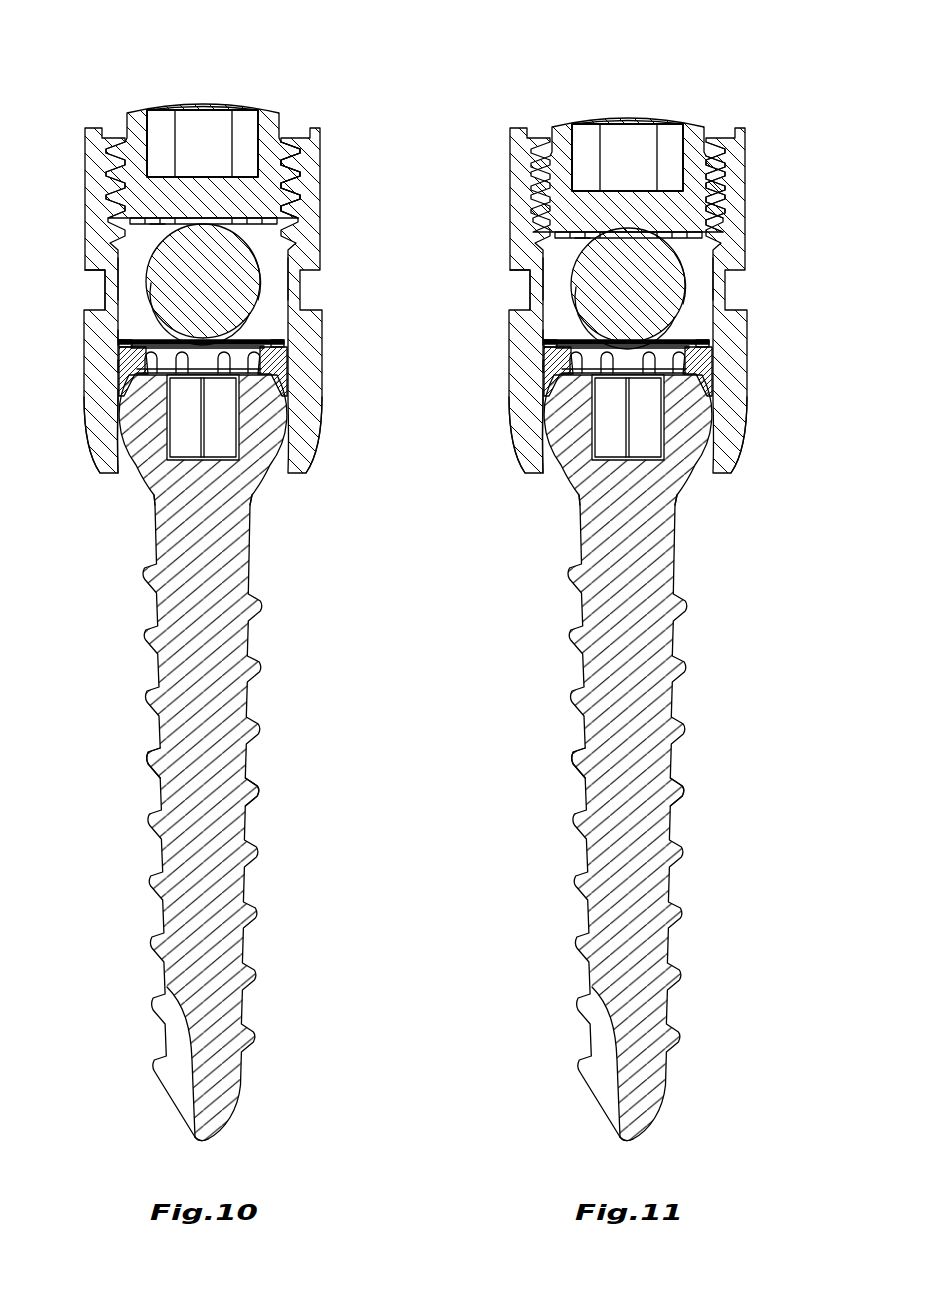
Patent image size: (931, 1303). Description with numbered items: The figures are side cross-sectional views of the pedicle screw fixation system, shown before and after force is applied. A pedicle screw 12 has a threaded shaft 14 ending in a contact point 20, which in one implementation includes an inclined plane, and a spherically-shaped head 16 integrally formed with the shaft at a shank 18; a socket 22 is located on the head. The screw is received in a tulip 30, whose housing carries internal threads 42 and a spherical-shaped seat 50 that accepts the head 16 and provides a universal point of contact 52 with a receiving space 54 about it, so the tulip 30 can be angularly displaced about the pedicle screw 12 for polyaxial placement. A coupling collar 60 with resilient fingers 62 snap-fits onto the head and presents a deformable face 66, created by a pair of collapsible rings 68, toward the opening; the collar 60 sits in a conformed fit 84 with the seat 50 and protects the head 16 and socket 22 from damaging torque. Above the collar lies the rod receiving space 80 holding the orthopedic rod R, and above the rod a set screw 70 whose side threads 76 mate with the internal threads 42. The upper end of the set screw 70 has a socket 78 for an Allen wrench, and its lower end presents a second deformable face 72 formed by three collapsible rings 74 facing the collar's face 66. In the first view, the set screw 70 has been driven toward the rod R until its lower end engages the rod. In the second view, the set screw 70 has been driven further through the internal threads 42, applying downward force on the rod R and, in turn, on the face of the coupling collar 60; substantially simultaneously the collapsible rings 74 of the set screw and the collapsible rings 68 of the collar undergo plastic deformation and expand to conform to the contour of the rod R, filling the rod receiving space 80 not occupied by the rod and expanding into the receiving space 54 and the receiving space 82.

In FIG. 10, the pedicle screw 12 is at (203, 775).
In FIG. 11, the pedicle screw 12 is at (628, 775).
In FIG. 10, the threaded shaft 14 is at (150, 762).
In FIG. 11, the threaded shaft 14 is at (587, 777).
In FIG. 10, the spherically-shaped head 16 is at (278, 470).
In FIG. 11, the spherically-shaped head 16 is at (646, 451).
In FIG. 10, the shank 18 is at (158, 552).
In FIG. 11, the shank 18 is at (606, 758).
In FIG. 10, the contact point 20 is at (203, 1140).
In FIG. 11, the contact point 20 is at (650, 1081).
In FIG. 10, the socket 22 is at (158, 503).
In FIG. 11, the socket 22 is at (588, 517).
In FIG. 10, the tulip 30 is at (209, 316).
In FIG. 11, the tulip 30 is at (634, 316).
In FIG. 10, the internal threads 42 is at (300, 196).
In FIG. 11, the internal threads 42 is at (760, 181).
In FIG. 10, the spherical-shaped seat 50 is at (126, 427).
In FIG. 11, the spherical-shaped seat 50 is at (499, 436).
In FIG. 10, the universal point of contact 52 is at (150, 460).
In FIG. 11, the universal point of contact 52 is at (582, 440).
In FIG. 10, the receiving space 54 is at (262, 284).
In FIG. 11, the receiving space 54 is at (689, 288).
In FIG. 10, the coupling collar 60 is at (268, 358).
In FIG. 11, the coupling collar 60 is at (689, 368).
In FIG. 10, the resilient fingers 62 is at (122, 397).
In FIG. 11, the resilient fingers 62 is at (508, 400).
In FIG. 10, the deformable face 66 is at (120, 334).
In FIG. 11, the deformable face 66 is at (496, 349).
In FIG. 10, the collapsible rings 68 is at (148, 336).
In FIG. 11, the collapsible rings 68 is at (515, 327).
In FIG. 10, the set screw 70 is at (218, 147).
In FIG. 11, the set screw 70 is at (643, 149).
In FIG. 10, the deformable face 72 is at (113, 250).
In FIG. 11, the deformable face 72 is at (497, 282).
In FIG. 10, the collapsible rings 74 is at (262, 236).
In FIG. 11, the collapsible rings 74 is at (694, 238).
In FIG. 10, the threads 76 is at (300, 160).
In FIG. 11, the threads 76 is at (760, 187).
In FIG. 10, the socket 78 is at (163, 122).
In FIG. 11, the socket 78 is at (624, 119).
In FIG. 10, the rod receiving space 80 is at (148, 290).
In FIG. 11, the rod receiving space 80 is at (635, 357).
In FIG. 10, the receiving space 82 is at (160, 224).
In FIG. 11, the receiving space 82 is at (521, 214).
In FIG. 10, the conformed fit 84 is at (120, 362).
In FIG. 11, the conformed fit 84 is at (494, 374).
In FIG. 10, the rod R is at (252, 257).
In FIG. 11, the rod R is at (741, 279).